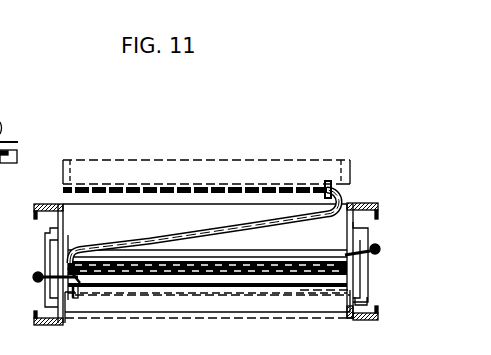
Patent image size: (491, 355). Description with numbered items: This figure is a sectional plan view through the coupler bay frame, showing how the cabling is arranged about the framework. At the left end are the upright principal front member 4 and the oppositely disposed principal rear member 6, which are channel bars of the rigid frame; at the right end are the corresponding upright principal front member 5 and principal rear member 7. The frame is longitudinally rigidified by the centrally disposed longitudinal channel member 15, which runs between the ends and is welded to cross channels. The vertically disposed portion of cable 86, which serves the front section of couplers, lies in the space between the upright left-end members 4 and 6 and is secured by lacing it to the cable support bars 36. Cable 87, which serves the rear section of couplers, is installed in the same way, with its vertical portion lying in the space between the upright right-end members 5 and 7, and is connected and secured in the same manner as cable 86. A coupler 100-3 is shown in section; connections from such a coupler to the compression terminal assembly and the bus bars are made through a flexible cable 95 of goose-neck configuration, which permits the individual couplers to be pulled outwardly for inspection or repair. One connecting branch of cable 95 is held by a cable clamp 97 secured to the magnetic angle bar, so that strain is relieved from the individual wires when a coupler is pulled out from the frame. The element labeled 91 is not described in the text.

The latch member 91 is at (15, 153).
The principal rear member 6 is at (36, 210).
The principal front member 4 is at (34, 318).
The cable 86 is at (33, 279).
The coupler 100-3 is at (128, 305).
The cable 95 is at (216, 228).
The cable clamp 97 is at (340, 190).
The principal rear member 7 is at (378, 207).
The cable support bar 36 is at (369, 236).
The cable 87 is at (381, 251).
The longitudinal channel member 15 is at (368, 271).
The principal front member 5 is at (380, 318).